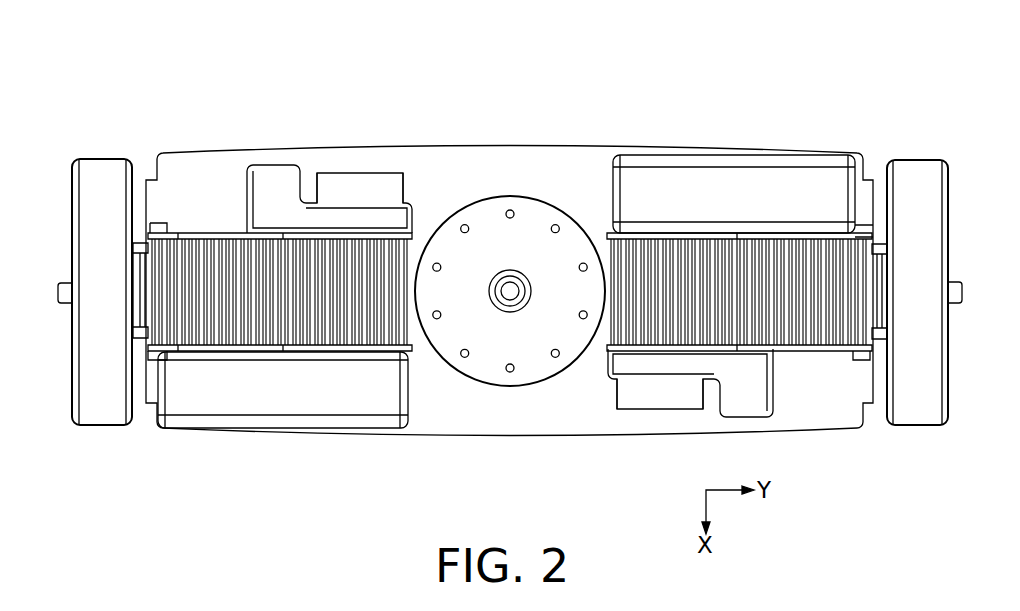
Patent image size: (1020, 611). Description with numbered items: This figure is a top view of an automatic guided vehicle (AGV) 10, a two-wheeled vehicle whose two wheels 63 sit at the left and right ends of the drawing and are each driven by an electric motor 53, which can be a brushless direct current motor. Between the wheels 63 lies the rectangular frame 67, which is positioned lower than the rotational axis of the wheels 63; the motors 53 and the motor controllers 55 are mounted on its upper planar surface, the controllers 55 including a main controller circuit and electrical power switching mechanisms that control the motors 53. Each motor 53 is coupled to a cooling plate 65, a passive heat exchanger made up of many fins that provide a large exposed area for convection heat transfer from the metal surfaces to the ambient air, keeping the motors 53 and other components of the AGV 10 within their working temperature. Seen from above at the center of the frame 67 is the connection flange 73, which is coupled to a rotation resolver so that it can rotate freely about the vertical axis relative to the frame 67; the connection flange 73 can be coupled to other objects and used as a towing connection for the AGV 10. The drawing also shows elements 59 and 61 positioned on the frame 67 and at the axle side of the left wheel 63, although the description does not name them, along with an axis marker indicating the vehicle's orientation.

The automatic guided vehicle 10 is at (232, 88).
The electric motor 53 is at (228, 232).
The motor controller 55 is at (277, 210).
The housing box 59 is at (637, 205).
The left axle 61 is at (140, 282).
The wheel 63 is at (917, 292).
The cooling plate 65 is at (228, 267).
The frame 67 is at (572, 405).
The connection flange 73 is at (533, 220).